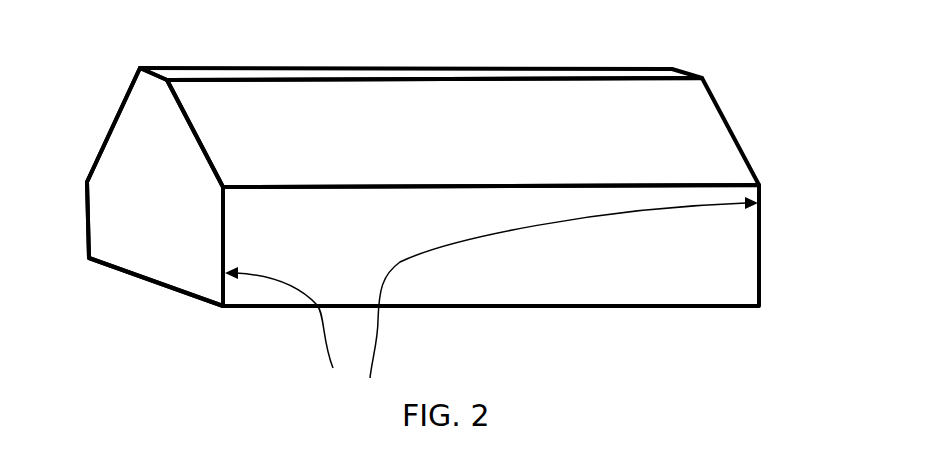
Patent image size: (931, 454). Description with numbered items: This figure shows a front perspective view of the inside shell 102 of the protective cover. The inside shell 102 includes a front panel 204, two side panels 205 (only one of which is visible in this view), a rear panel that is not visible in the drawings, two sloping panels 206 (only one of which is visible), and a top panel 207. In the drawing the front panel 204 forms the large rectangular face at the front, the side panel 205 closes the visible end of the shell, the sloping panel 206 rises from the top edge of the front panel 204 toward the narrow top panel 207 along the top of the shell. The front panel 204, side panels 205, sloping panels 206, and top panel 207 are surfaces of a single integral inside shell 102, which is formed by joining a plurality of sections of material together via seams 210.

The inside shell 102 is at (123, 63).
The front panel 204 is at (725, 268).
The side panel 205 is at (167, 265).
The sloping panel 206 is at (716, 128).
The top panel 207 is at (672, 72).
The seam 210 is at (491, 295).